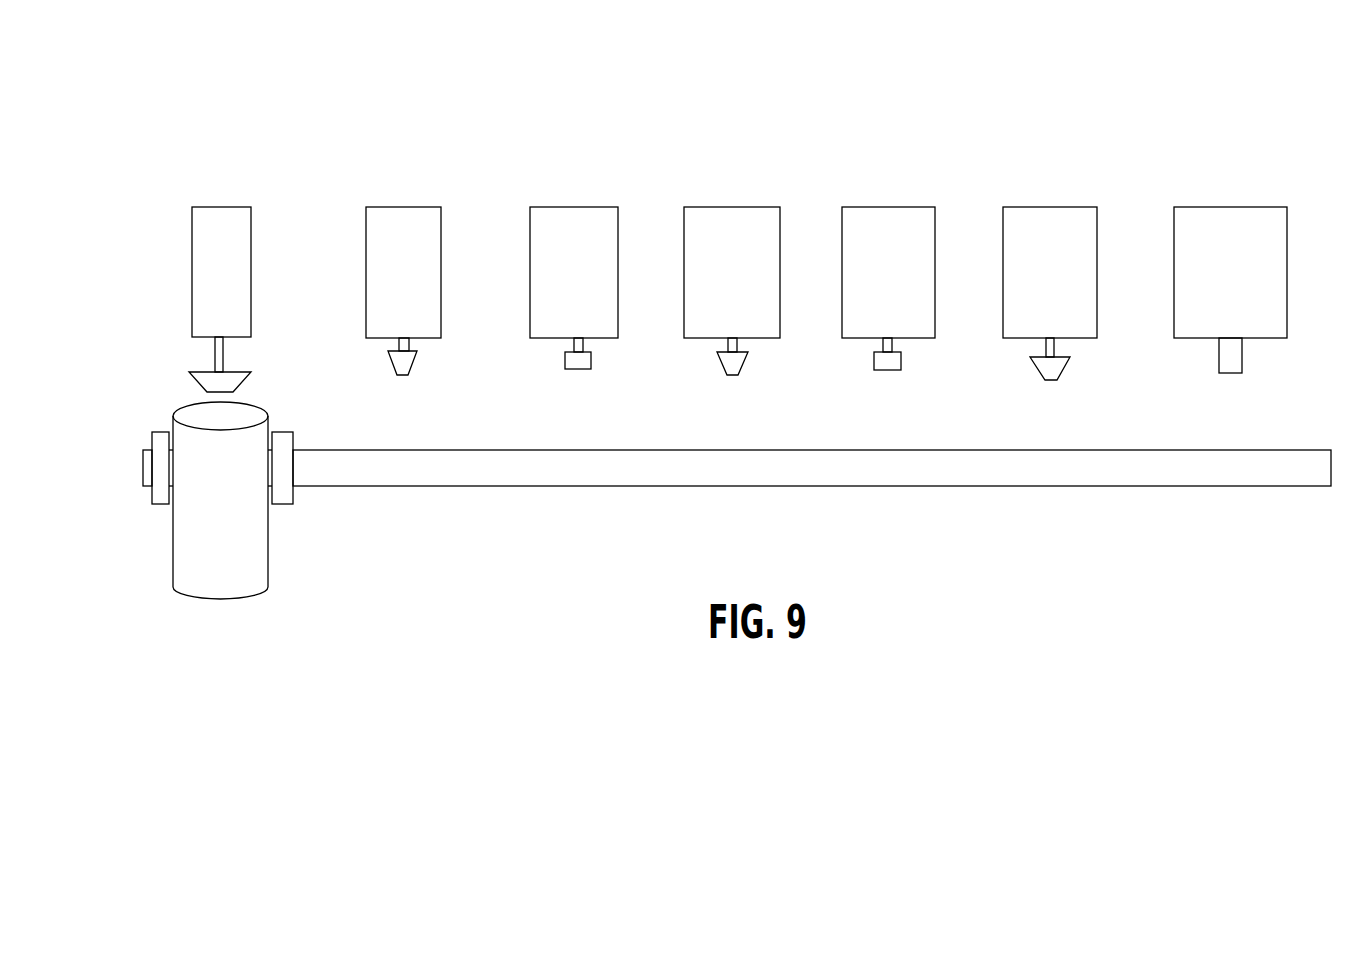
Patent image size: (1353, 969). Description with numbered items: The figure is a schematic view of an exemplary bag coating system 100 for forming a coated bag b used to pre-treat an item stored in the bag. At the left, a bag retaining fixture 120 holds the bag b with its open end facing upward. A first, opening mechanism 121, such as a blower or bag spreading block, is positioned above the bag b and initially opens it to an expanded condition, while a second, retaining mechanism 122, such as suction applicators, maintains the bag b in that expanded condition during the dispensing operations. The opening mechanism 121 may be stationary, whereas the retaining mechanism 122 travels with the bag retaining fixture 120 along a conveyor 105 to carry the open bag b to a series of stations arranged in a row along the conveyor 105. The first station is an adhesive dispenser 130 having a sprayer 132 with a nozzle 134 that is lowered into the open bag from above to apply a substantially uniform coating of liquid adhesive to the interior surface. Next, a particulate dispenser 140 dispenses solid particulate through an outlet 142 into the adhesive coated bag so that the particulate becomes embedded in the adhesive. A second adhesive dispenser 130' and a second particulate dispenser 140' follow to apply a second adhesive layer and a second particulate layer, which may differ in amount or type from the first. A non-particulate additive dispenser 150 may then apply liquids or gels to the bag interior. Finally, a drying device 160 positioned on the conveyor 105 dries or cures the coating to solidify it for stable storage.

The bag coating system 100 is at (694, 75).
The conveyor 105 is at (348, 467).
The bag retaining fixture 120 is at (118, 430).
The opening mechanism 121 is at (208, 297).
The retaining mechanism 122 is at (158, 496).
The bag b is at (253, 557).
The adhesive dispenser 130 is at (409, 235).
The sprayer 132 is at (448, 357).
The nozzle 134 is at (403, 363).
The particulate dispenser 140 is at (574, 246).
The outlet 142 is at (588, 360).
The second adhesive dispenser 130' is at (734, 257).
The second particulate dispenser 140' is at (892, 251).
The non-particulate additive dispenser 150 is at (1053, 228).
The drying device 160 is at (1235, 230).